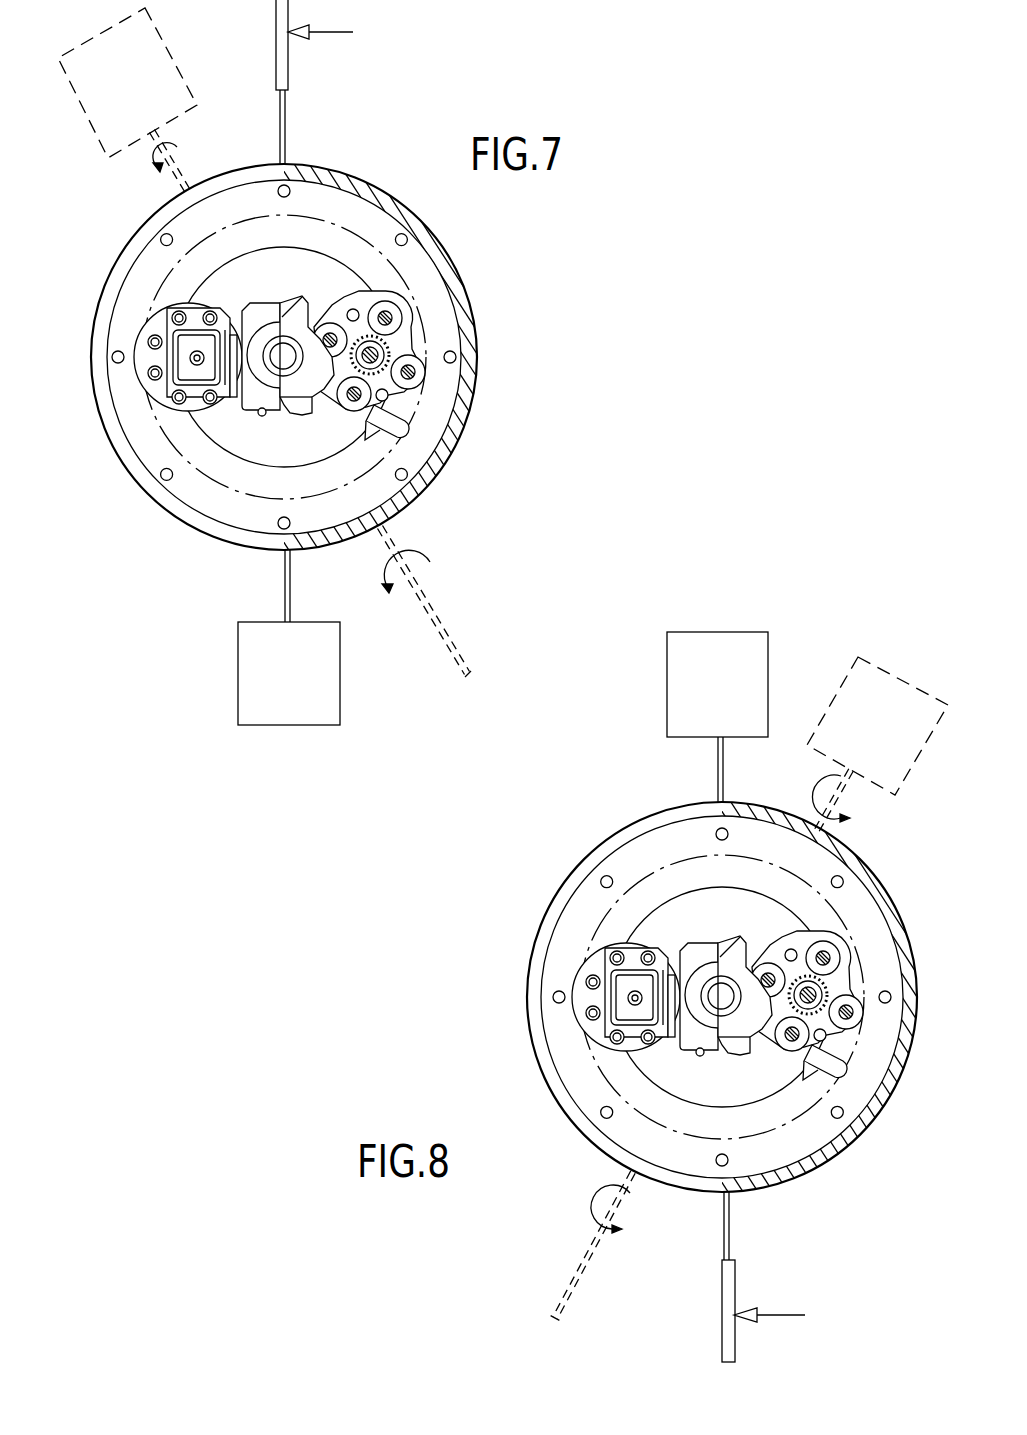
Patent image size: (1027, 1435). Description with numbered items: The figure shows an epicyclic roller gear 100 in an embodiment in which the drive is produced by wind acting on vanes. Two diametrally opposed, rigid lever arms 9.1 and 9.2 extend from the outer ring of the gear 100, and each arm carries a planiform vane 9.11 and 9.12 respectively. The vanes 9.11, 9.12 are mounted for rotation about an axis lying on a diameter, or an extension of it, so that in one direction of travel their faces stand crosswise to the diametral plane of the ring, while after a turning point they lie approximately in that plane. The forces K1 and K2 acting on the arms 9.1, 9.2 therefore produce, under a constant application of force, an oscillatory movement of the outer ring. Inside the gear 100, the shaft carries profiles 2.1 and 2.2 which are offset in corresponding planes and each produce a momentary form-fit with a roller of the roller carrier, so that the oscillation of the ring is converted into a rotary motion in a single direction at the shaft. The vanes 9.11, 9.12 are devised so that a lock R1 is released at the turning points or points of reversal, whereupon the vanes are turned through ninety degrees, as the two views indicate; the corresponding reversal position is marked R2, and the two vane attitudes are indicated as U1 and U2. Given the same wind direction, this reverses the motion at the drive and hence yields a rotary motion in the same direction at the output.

In FIG. 7, the epicyclic roller gear 100 is at (498, 297).
In FIG. 8, the epicyclic roller gear 100 is at (872, 1150).
In FIG. 7, the profile 2.1 is at (303, 403).
In FIG. 8, the profile 2.1 is at (742, 1043).
In FIG. 7, the profile 2.2 is at (299, 298).
In FIG. 8, the profile 2.2 is at (740, 937).
In FIG. 7, the lever arm 9.1 is at (287, 123).
In FIG. 8, the lever arm 9.1 is at (724, 793).
In FIG. 7, the vane 9.11 is at (276, 32).
In FIG. 8, the vane 9.11 is at (679, 692).
In FIG. 7, the lever arm 9.2 is at (284, 590).
In FIG. 8, the lever arm 9.2 is at (723, 1236).
In FIG. 7, the vane 9.12 is at (255, 672).
In FIG. 8, the vane 9.12 is at (722, 1310).
In FIG. 7, the force K1 is at (320, 19).
In FIG. 8, the force K2 is at (769, 1301).
In FIG. 7, the lock R1 is at (291, 378).
In FIG. 8, the rotation direction 2 R2 is at (718, 982).
In FIG. 7, the tool position 1 U1 is at (137, 95).
In FIG. 8, the tool position 2 U2 is at (552, 1313).